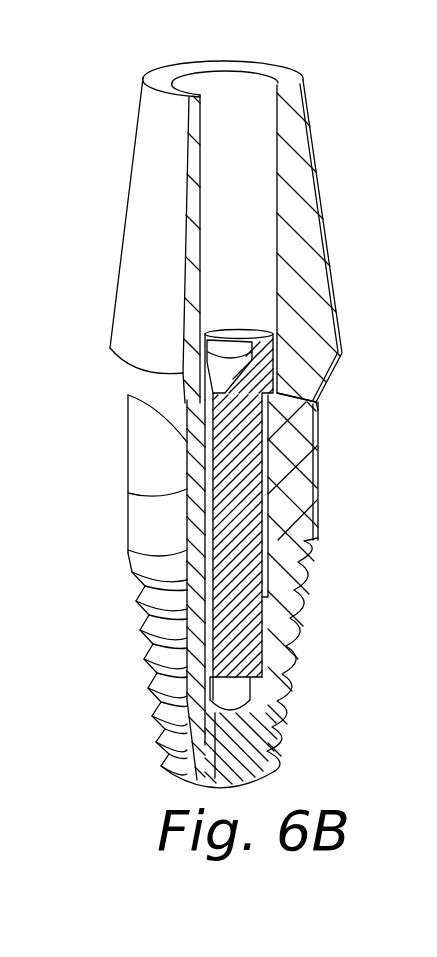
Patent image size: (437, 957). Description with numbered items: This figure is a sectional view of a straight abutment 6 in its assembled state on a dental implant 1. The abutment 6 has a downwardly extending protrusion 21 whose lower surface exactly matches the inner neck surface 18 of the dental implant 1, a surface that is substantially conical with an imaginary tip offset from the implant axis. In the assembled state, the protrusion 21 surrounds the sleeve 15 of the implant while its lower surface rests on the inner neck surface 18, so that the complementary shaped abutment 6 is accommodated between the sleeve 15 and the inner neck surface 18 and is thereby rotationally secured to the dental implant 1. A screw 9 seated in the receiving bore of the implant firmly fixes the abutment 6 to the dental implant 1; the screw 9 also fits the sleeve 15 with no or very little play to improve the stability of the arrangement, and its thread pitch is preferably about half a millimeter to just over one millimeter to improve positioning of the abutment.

The dental implant 1 is at (132, 672).
The abutment 6 is at (137, 248).
The screw 9 is at (291, 357).
The downwardly extending protrusion 21 is at (315, 401).
The sleeve 15 is at (298, 446).
The inner neck surface 18 is at (291, 511).